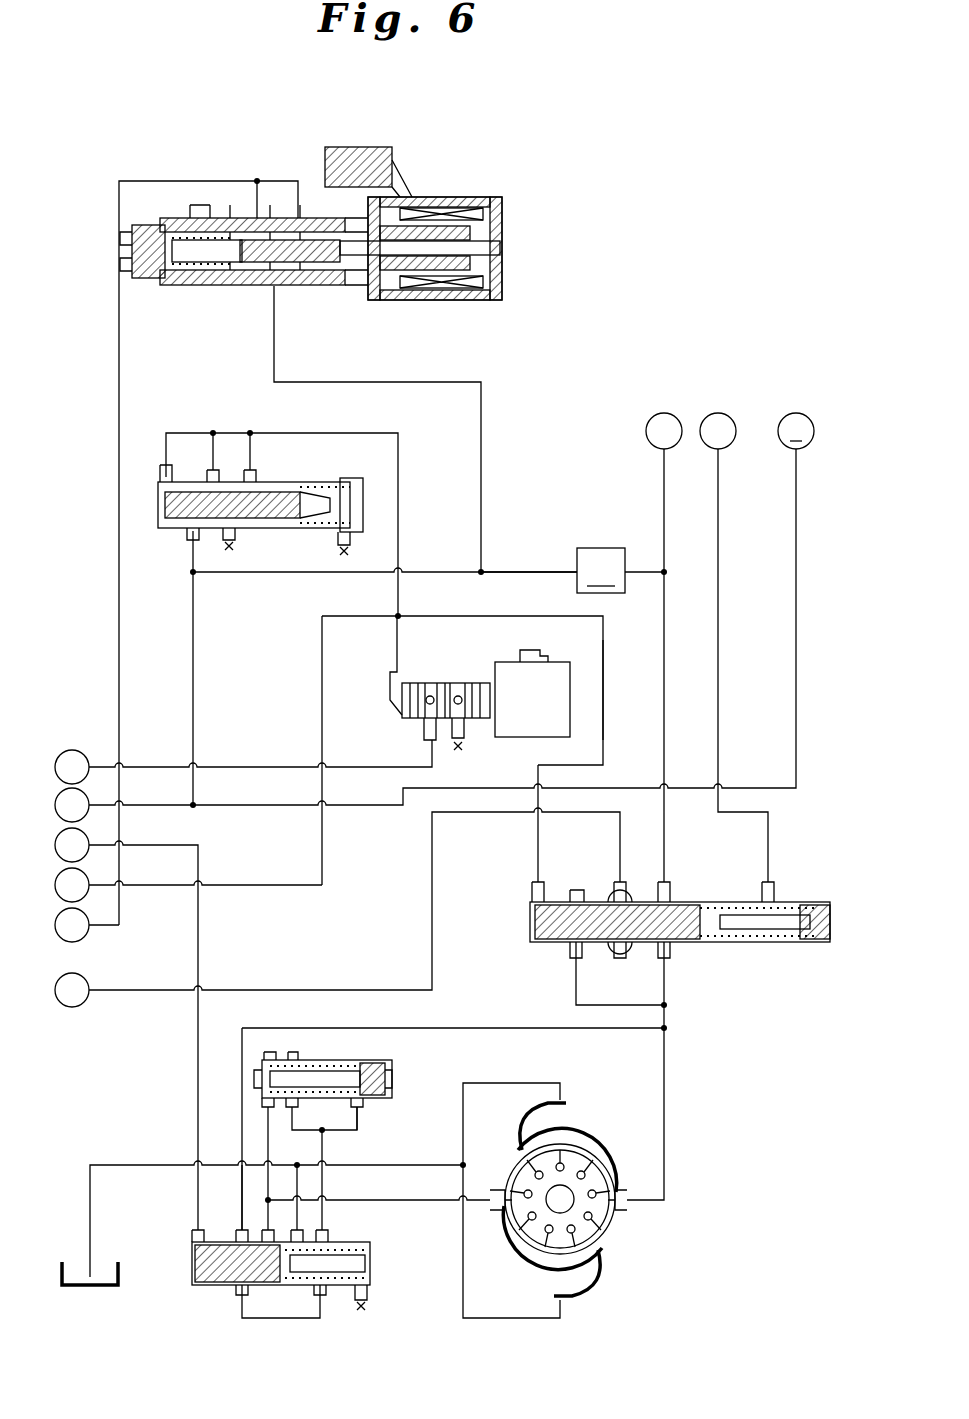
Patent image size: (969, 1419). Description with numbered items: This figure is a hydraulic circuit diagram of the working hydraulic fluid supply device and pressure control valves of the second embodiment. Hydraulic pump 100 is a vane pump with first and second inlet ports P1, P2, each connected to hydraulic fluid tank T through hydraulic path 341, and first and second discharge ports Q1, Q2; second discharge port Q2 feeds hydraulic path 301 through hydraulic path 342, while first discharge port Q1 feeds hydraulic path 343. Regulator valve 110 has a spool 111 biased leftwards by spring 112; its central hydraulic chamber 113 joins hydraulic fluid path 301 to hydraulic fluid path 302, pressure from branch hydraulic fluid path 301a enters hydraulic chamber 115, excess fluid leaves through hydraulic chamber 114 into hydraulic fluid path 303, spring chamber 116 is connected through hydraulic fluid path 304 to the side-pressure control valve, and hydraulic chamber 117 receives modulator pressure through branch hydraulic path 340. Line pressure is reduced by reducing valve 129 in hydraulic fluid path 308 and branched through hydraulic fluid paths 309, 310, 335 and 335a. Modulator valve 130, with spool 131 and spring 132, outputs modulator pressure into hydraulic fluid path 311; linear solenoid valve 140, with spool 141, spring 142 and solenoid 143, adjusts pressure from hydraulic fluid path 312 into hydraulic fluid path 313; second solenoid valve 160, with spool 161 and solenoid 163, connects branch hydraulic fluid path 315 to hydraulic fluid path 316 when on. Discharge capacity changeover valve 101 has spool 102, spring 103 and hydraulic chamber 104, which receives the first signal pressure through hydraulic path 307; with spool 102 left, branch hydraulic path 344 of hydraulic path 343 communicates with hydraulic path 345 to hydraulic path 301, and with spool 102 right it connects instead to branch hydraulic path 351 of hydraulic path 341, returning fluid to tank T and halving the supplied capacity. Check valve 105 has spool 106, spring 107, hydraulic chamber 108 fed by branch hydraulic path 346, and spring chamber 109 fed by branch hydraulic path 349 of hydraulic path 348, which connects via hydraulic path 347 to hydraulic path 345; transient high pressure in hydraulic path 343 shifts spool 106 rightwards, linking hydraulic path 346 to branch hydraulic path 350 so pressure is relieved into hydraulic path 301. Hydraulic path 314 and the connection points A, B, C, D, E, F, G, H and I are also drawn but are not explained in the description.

The hydraulic pump 100 is at (587, 1191).
The discharge capacity changeover valve 101 is at (305, 1293).
The spool 102 is at (228, 1282).
The spring 103 is at (346, 1285).
The hydraulic chamber 104 is at (200, 1285).
The check valve 105 is at (341, 1066).
The spool 106 is at (320, 1066).
The spring 107 is at (254, 1078).
The hydraulic chamber 108 is at (270, 1058).
The spring chamber 109 is at (368, 1063).
The regulator valve 110 is at (647, 925).
The spool 111 is at (686, 958).
The spring 112 is at (778, 945).
The hydraulic chamber 113 is at (668, 895).
The hydraulic chamber 114 is at (620, 958).
The hydraulic chamber 115 is at (576, 890).
The spring chamber 116 is at (790, 898).
The hydraulic chamber 117 is at (528, 942).
The reducing valve 129 is at (608, 546).
The modulator valve 130 is at (246, 482).
The spool 131 is at (282, 520).
The spring 132 is at (316, 486).
The linear solenoid valve 140 is at (334, 243).
The spool 141 is at (290, 285).
The spring 142 is at (202, 290).
The solenoid 143 is at (488, 300).
The second solenoid valve 160 is at (488, 702).
The spool 161 is at (428, 683).
The solenoid 163 is at (550, 672).
The hydraulic fluid path 301 is at (668, 1028).
The branch hydraulic fluid path 301a is at (574, 992).
The hydraulic fluid path 302 is at (590, 745).
The hydraulic fluid path 303 is at (312, 988).
The hydraulic fluid path 304 is at (722, 622).
The hydraulic path 307 is at (200, 938).
The hydraulic fluid path 308 is at (518, 568).
The hydraulic fluid path 309 is at (234, 578).
The hydraulic fluid path 310 is at (190, 560).
The hydraulic fluid path 311 is at (312, 428).
The hydraulic fluid path 312 is at (481, 445).
The hydraulic fluid path 313 is at (180, 181).
The passage 314 is at (318, 670).
The branch hydraulic fluid path 315 is at (395, 645).
The hydraulic fluid path 316 is at (270, 763).
The hydraulic fluid path 335 is at (192, 618).
The hydraulic fluid path 335a is at (262, 815).
The branch hydraulic path 340 is at (603, 700).
The hydraulic path 341 is at (126, 1160).
The hydraulic path 342 is at (668, 1100).
The hydraulic path 343 is at (338, 1202).
The branch hydraulic path 344 is at (262, 1216).
The hydraulic path 345 is at (264, 1200).
The branch hydraulic path 346 is at (264, 1145).
The hydraulic path 347 is at (282, 1320).
The hydraulic path 348 is at (326, 1152).
The branch hydraulic path 349 is at (362, 1126).
The branch hydraulic path 350 is at (302, 1116).
The branch hydraulic path 351 is at (300, 1222).
The connection point A is at (72, 767).
The connection point B is at (72, 805).
The connection point C is at (72, 845).
The connection point D is at (72, 885).
The connection point E is at (72, 925).
The connection point F is at (72, 990).
The connection point G is at (664, 431).
The connection point H is at (718, 431).
The connection point I is at (796, 431).
The hydraulic fluid tank T is at (60, 1262).
The first inlet port P1 is at (586, 1270).
The second inlet port P2 is at (575, 1125).
The first discharge port Q1 is at (500, 1218).
The second discharge port Q2 is at (614, 1175).